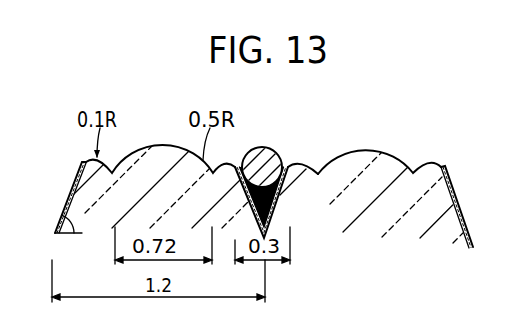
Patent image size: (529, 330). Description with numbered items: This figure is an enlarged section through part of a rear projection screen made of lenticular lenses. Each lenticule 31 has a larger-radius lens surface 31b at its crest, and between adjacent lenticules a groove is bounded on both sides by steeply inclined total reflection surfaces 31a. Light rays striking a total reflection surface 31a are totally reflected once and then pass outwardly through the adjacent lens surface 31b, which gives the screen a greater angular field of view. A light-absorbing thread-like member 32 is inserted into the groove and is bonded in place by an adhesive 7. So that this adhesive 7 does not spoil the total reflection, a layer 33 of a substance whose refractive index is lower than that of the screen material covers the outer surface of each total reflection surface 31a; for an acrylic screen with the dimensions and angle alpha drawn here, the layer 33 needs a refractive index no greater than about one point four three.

The lenticule 31 is at (161, 141).
The total reflection surface 31a is at (68, 193).
The lens surface 31b is at (380, 152).
The thread-like member 32 is at (261, 146).
The layer 33 is at (78, 162).
The adhesive 7 is at (276, 212).